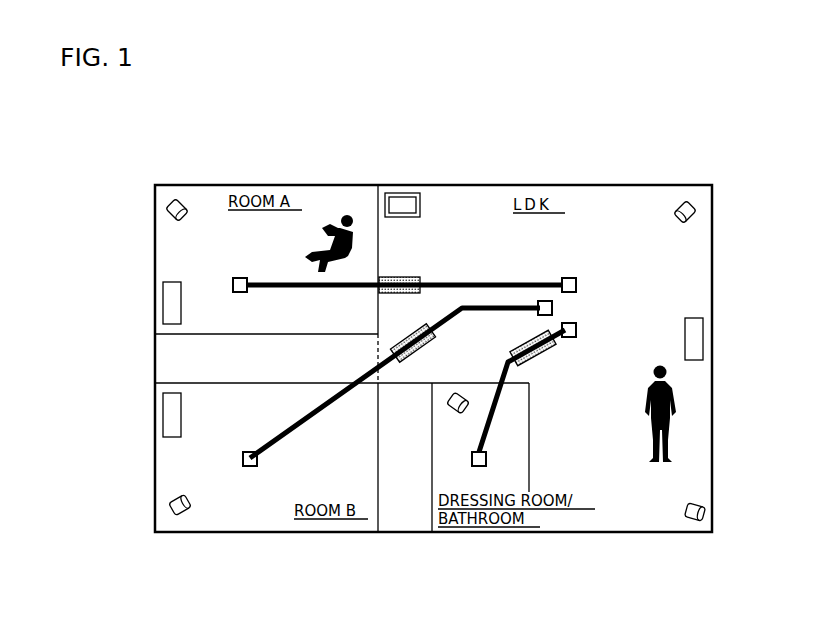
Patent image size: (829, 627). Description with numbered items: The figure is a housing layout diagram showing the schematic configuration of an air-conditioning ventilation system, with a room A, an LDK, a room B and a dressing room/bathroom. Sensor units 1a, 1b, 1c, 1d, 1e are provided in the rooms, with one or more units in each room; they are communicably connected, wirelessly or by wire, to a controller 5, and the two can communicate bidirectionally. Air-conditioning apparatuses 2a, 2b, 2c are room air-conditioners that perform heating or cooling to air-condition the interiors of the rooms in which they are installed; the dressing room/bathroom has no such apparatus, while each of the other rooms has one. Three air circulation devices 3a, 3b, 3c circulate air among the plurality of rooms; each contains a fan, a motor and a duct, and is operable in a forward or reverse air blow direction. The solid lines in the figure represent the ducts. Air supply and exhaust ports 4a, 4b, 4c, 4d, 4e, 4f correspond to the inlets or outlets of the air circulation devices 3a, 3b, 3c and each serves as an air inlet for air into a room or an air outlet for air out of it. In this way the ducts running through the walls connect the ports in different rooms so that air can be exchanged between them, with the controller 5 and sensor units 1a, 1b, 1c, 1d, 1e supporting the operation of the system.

The sensor unit 1a is at (194, 223).
The sensor unit 1b is at (202, 500).
The sensor unit 1c is at (652, 226).
The sensor unit 1d is at (664, 499).
The sensor unit 1e is at (458, 379).
The air-conditioning apparatus 2a is at (191, 309).
The air-conditioning apparatus 2b is at (190, 421).
The air-conditioning apparatus 2c is at (682, 338).
The air circulation device 3a is at (415, 274).
The air circulation device 3b is at (410, 334).
The air circulation device 3c is at (540, 359).
The air supply and exhaust port 4a is at (260, 300).
The air supply and exhaust port 4b is at (266, 474).
The air supply and exhaust port 4c is at (585, 300).
The air supply and exhaust port 4d is at (517, 322).
The air supply and exhaust port 4e is at (584, 346).
The air supply and exhaust port 4f is at (461, 473).
The controller 5 is at (417, 214).